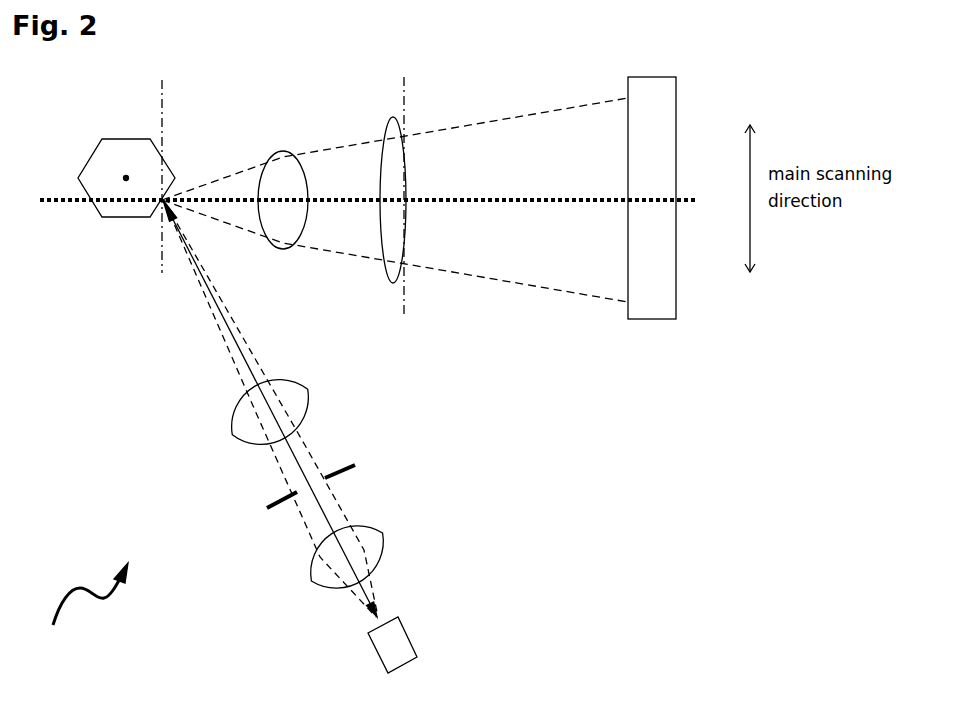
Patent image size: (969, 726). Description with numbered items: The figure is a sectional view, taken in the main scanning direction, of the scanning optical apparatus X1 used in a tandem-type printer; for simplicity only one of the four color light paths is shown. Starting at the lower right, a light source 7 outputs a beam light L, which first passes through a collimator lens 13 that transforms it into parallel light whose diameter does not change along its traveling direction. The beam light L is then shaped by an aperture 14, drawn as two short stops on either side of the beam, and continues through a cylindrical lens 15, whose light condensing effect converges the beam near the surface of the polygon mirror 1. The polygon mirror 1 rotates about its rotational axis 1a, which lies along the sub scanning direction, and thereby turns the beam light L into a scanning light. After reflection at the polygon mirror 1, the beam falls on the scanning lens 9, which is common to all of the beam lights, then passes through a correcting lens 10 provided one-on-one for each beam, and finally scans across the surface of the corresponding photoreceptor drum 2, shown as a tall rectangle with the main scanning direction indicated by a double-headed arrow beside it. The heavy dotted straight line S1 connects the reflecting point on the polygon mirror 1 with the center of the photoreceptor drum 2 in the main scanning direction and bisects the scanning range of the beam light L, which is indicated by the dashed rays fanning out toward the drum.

The polygon mirror 1 is at (125, 217).
The rotational axis 1a is at (126, 175).
The photoreceptor drum 2 is at (651, 319).
The light source 7 is at (402, 628).
The scanning lens 9 is at (283, 249).
The correcting lens 10 is at (392, 283).
The collimator lens 13 is at (380, 548).
The aperture 14 is at (338, 466).
The cylindrical lens 15 is at (245, 440).
The beam light L is at (224, 318).
The straight line S1- S1 is at (365, 202).
The scanning optical apparatus X1 is at (84, 609).